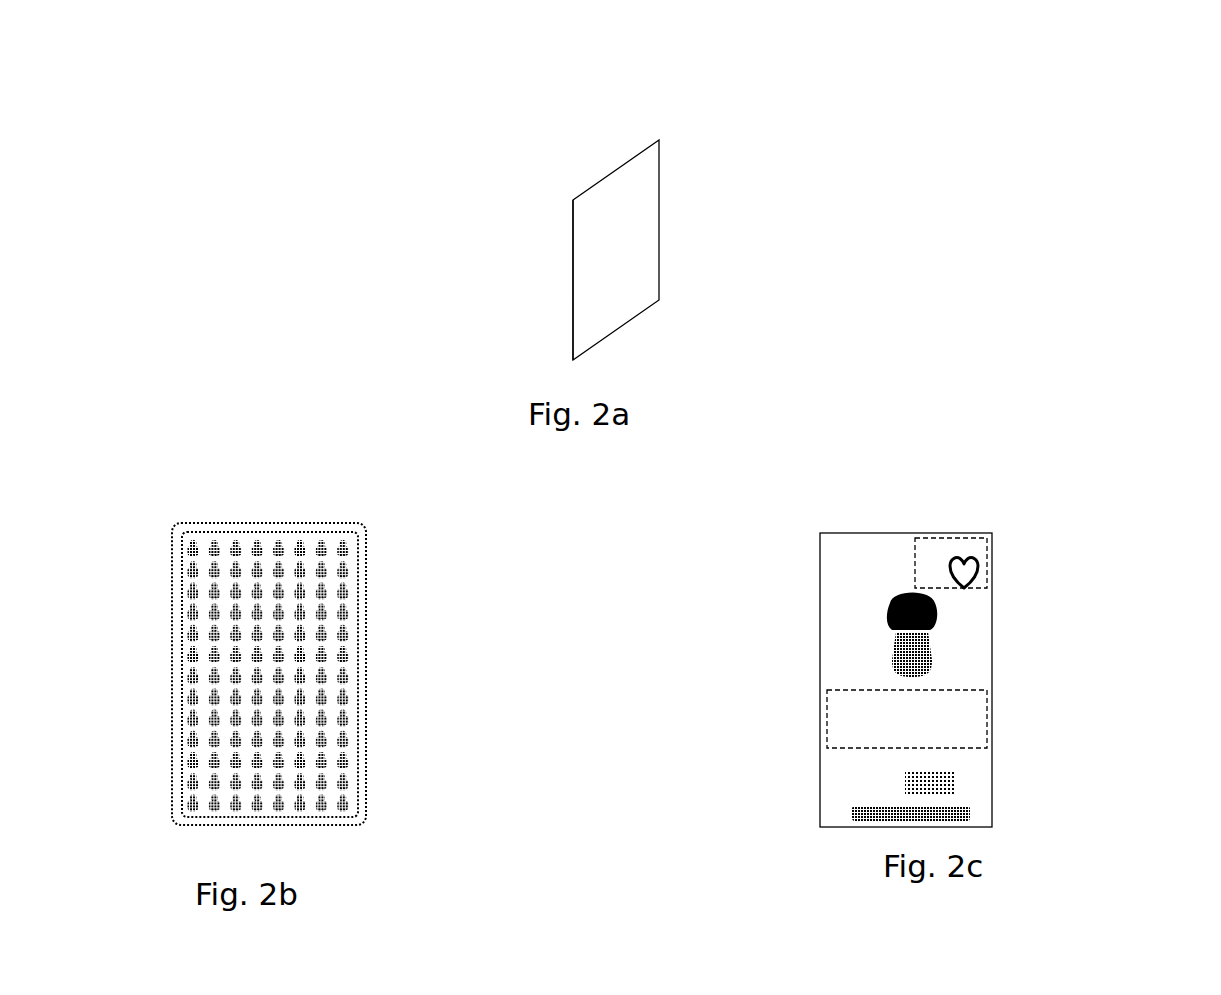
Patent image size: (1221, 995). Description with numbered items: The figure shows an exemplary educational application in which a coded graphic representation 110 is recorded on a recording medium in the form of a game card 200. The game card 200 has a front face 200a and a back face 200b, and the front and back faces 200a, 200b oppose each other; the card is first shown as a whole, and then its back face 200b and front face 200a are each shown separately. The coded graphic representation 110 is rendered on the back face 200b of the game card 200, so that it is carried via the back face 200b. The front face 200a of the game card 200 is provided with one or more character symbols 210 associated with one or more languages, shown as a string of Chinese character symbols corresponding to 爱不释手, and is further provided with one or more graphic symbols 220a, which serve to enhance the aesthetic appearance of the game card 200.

In FIG. 2a, the game card 200 is at (703, 157).
In FIG. 2a, the front face 200a is at (642, 242).
In FIG. 2c, the front face 200a is at (934, 533).
In FIG. 2a, the back face 200b is at (565, 268).
In FIG. 2b, the back face 200b is at (180, 657).
In FIG. 2b, the coded graphic representation 110 is at (356, 597).
In FIG. 2c, the graphic symbols 220a is at (980, 792).
In FIG. 2c, the character symbols 210 is at (978, 685).